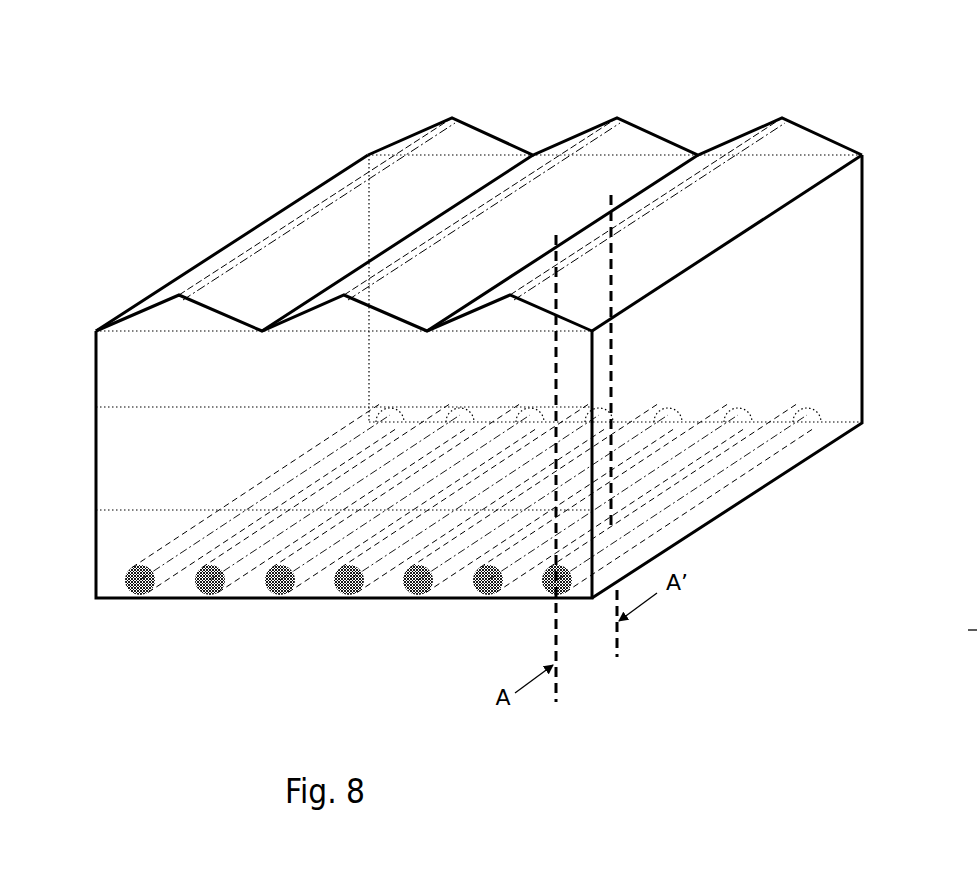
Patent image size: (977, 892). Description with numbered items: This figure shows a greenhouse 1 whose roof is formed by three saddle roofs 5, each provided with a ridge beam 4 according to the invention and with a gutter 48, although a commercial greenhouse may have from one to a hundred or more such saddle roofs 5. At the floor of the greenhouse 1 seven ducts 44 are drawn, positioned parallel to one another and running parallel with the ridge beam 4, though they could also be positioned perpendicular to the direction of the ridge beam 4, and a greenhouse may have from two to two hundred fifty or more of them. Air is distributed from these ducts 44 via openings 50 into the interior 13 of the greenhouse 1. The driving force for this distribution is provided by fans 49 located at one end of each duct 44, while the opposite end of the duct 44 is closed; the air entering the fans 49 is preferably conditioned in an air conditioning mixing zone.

The greenhouse 1 is at (838, 343).
The ridge beam 4 is at (427, 132).
The saddle roof 5 is at (472, 132).
The interior of the greenhouse 13 is at (795, 287).
The duct 44 is at (688, 505).
The gutter 48 is at (808, 193).
The fan 49 is at (488, 582).
The opening 50 is at (757, 460).